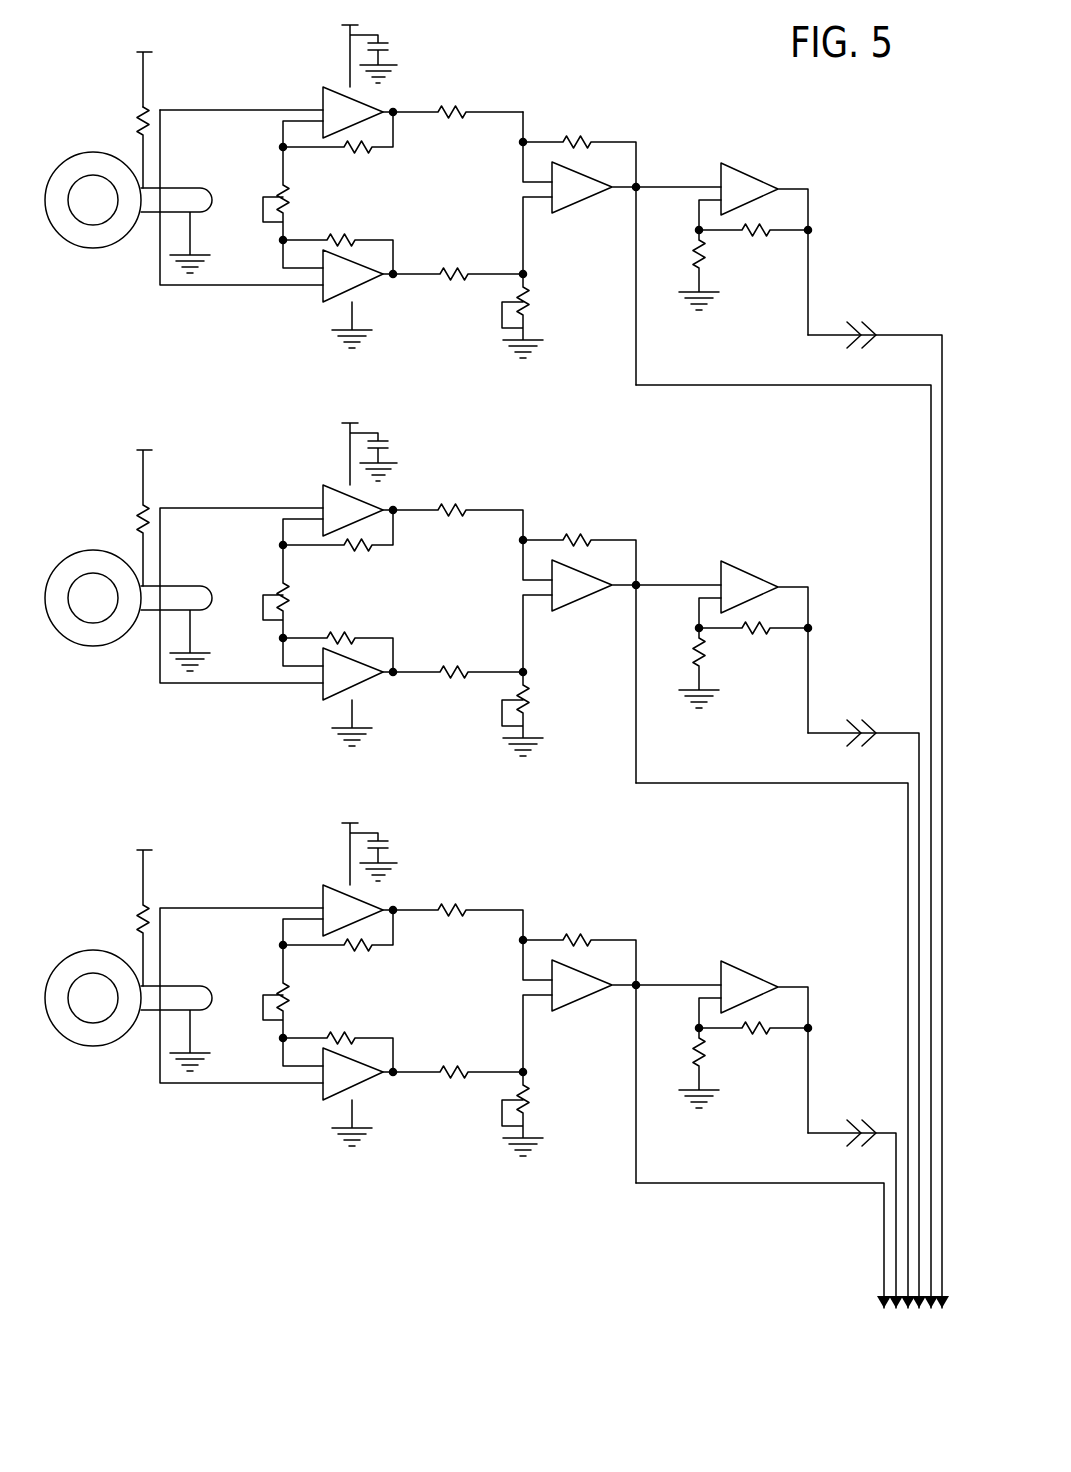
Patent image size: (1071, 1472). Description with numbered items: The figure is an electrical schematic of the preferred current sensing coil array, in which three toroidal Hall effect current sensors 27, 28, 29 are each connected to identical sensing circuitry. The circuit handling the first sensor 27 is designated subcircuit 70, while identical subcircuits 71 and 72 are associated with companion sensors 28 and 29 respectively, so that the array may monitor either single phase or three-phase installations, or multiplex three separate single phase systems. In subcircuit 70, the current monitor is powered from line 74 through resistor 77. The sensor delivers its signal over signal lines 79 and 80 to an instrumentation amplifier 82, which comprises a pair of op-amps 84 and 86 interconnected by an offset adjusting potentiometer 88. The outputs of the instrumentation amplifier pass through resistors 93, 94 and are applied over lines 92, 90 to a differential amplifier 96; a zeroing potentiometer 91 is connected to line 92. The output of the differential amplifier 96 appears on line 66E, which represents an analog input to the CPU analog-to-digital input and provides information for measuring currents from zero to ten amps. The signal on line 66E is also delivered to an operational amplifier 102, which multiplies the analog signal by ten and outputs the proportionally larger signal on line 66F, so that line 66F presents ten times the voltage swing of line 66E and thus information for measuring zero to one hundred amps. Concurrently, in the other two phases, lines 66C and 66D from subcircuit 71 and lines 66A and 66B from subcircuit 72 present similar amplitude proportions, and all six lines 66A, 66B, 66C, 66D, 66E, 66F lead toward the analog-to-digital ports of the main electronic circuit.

The toroidal Hall effect current sensor 27 is at (90, 156).
The toroidal Hall effect current sensor 28 is at (128, 572).
The toroidal Hall effect current sensor 29 is at (128, 975).
The subcircuit 70 is at (460, 194).
The subcircuit 71 is at (460, 603).
The subcircuit 72 is at (460, 1003).
The line 74 is at (145, 80).
The resistor 77 is at (145, 110).
The signal line 79 is at (203, 110).
The signal line 80 is at (228, 285).
The instrumentation amplifier 82 is at (306, 297).
The op-amp 84 is at (350, 110).
The op-amp 86 is at (358, 275).
The offset adjusting potentiometer 88 is at (300, 193).
The line 90 is at (523, 125).
The zeroing potentiometer 91 is at (533, 297).
The line 92 is at (523, 241).
The resistor 93 is at (456, 268).
The resistor 94 is at (452, 118).
The differential amplifier 96 is at (594, 173).
The operational amplifier 102 is at (743, 190).
The line 66A is at (884, 1217).
The line 66B is at (896, 1258).
The line 66C is at (908, 832).
The line 66D is at (919, 900).
The line 66E is at (718, 387).
The line 66F is at (808, 307).